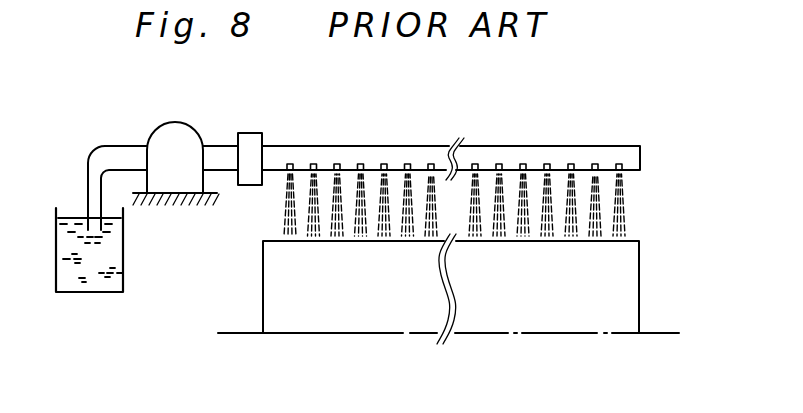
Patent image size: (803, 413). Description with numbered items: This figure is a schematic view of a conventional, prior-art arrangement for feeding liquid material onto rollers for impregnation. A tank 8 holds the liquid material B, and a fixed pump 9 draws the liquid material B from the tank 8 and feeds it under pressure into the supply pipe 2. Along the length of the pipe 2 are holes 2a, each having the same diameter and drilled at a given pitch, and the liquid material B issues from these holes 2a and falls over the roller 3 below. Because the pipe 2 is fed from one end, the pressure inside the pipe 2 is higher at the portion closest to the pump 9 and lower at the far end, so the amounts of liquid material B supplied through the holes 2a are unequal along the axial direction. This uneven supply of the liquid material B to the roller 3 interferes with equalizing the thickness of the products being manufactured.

The fixed pump 9 is at (178, 129).
The supply pipe 2 is at (407, 146).
The holes 2a is at (518, 168).
The roller 3 is at (639, 278).
The tank 8 is at (90, 294).
The liquid material B is at (103, 257).